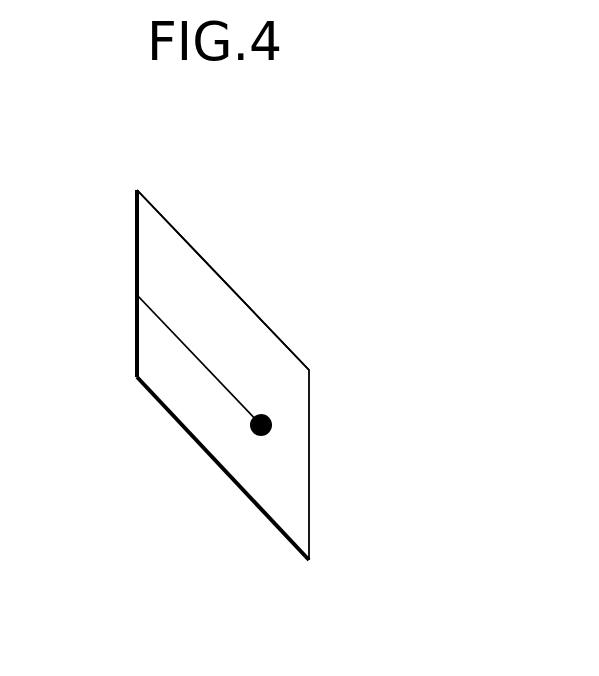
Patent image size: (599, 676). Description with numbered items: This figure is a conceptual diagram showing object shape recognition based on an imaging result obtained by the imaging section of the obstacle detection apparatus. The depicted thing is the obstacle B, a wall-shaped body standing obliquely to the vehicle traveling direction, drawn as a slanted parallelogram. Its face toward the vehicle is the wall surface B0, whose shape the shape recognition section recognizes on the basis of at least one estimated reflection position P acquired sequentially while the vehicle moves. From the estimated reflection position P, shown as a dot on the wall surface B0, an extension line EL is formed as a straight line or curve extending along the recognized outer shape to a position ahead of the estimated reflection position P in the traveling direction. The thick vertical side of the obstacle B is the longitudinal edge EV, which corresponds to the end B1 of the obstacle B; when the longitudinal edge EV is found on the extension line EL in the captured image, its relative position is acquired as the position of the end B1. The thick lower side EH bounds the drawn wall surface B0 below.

The obstacle B is at (309, 475).
The wall surface B0 is at (187, 278).
The end B1 is at (137, 190).
The longitudinal edge EV is at (137, 258).
The lower oblique edge EH is at (219, 468).
The extension line EL is at (242, 398).
The estimated reflection position P is at (272, 420).